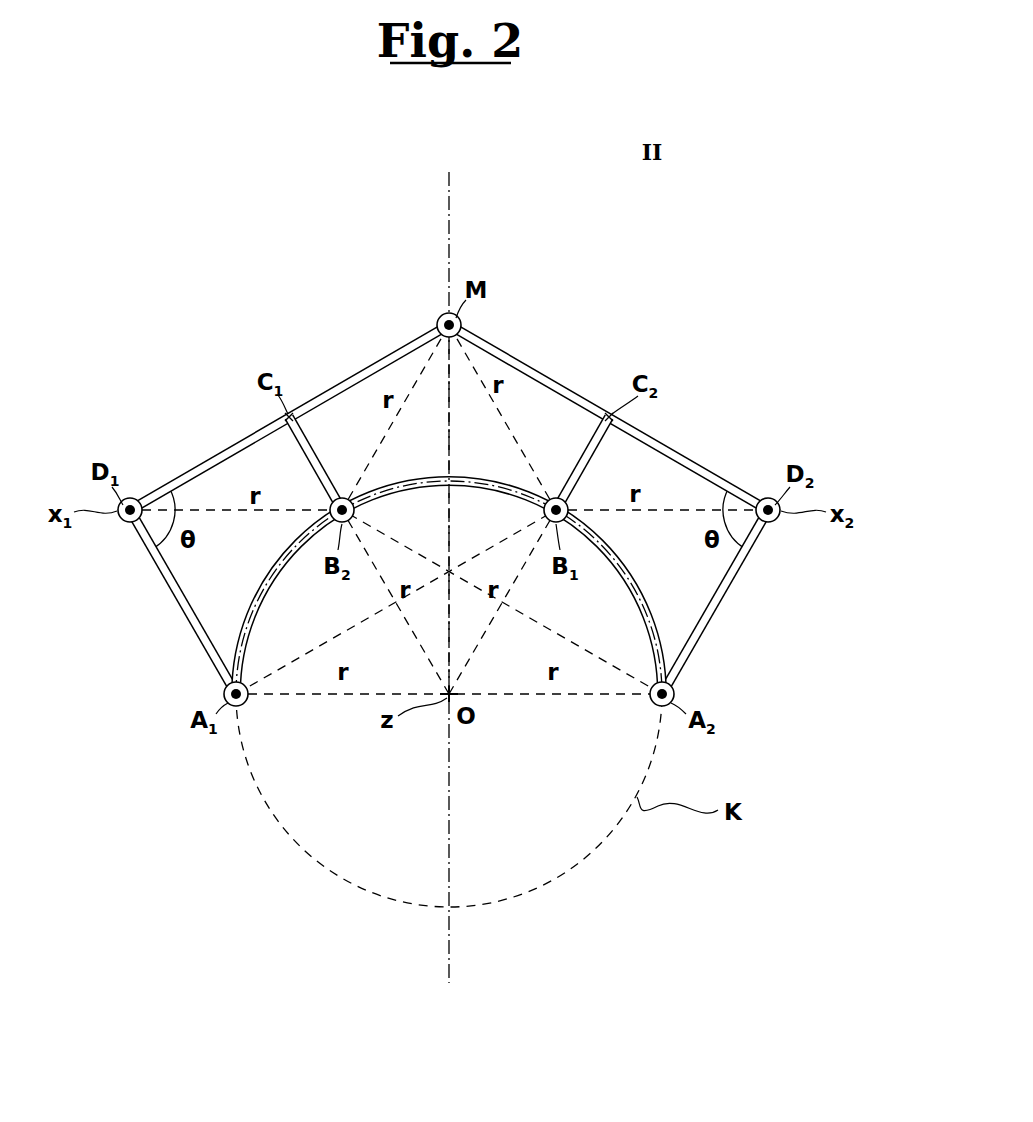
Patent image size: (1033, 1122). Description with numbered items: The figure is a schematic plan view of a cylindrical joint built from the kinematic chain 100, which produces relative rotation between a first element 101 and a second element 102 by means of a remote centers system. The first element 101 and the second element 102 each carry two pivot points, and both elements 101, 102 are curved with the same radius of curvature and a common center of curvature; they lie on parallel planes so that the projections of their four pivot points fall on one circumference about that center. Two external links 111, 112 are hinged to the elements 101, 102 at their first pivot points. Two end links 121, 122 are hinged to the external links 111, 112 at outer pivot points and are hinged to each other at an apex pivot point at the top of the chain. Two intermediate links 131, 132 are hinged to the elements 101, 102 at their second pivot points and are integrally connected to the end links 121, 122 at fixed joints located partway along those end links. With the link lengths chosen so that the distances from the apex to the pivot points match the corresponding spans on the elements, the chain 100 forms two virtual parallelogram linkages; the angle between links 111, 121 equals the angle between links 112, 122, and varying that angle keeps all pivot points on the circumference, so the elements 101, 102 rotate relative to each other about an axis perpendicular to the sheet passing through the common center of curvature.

The kinematic chain 100 is at (226, 157).
The first element 101 is at (270, 573).
The second element 102 is at (660, 640).
The external link 111 is at (178, 596).
The external link 112 is at (720, 596).
The end link 121 is at (238, 450).
The end link 122 is at (660, 450).
The intermediate link 131 is at (580, 457).
The intermediate link 132 is at (318, 457).